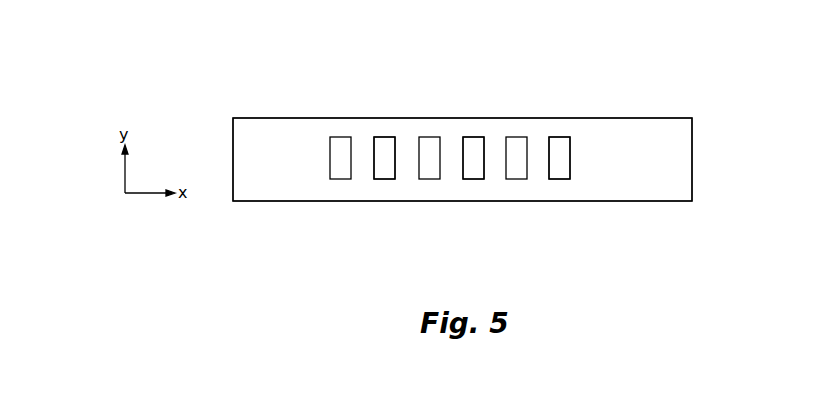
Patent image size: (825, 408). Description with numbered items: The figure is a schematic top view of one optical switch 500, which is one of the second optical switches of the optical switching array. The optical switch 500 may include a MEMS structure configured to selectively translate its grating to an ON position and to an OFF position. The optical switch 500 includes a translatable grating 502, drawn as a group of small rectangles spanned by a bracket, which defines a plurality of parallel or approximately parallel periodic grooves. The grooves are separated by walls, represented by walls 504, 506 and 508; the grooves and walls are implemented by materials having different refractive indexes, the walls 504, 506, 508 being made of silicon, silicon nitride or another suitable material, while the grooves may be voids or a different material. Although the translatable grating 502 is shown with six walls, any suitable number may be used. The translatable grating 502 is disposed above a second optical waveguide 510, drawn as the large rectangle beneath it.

The optical switch 500 is at (706, 71).
The translatable grating 502 is at (576, 103).
The wall 504 is at (386, 179).
The wall 506 is at (477, 179).
The wall 508 is at (558, 179).
The second optical waveguide 510 is at (670, 201).